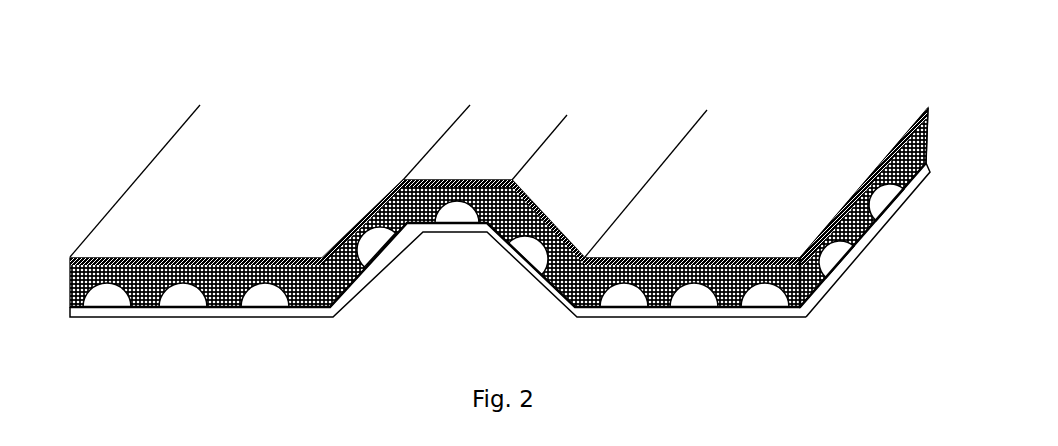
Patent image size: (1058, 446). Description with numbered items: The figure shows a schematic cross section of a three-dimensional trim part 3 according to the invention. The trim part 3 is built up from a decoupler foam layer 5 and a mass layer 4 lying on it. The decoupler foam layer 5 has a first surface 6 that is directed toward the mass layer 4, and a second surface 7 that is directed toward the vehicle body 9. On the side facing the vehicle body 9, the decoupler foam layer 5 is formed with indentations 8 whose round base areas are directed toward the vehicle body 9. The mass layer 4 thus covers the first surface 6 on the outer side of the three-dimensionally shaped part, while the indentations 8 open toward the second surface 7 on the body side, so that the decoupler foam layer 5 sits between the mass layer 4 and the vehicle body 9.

The 3D trim part 3 is at (402, 83).
The mass layer 4 is at (677, 257).
The decoupler foam layer 5 is at (348, 292).
The first surface 6 is at (220, 262).
The second surface 7 is at (223, 310).
The indentations 8 is at (373, 248).
The vehicle body 9 is at (808, 313).